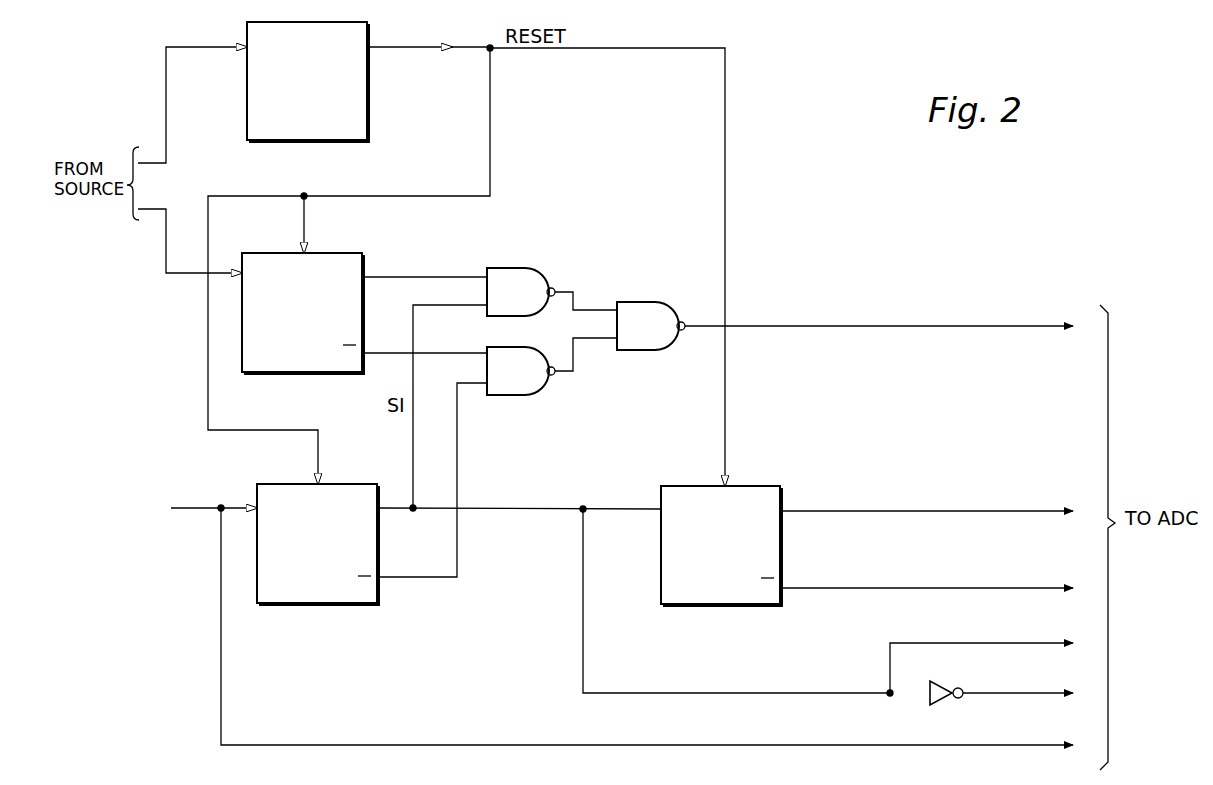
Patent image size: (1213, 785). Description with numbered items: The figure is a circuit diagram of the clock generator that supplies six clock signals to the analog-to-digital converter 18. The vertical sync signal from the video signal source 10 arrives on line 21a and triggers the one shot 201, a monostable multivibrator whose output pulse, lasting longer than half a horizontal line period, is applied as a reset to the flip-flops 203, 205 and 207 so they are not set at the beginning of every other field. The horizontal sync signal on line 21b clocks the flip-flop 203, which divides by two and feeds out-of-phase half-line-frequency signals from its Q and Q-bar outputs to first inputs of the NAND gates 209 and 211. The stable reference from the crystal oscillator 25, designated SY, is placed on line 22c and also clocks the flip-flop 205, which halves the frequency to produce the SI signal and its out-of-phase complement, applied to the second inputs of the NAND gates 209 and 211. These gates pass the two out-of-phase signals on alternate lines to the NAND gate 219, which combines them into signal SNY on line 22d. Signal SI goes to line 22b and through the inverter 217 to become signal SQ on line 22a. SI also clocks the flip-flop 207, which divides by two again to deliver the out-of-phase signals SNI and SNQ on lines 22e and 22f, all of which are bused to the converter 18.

The video signal source 10 is at (80, 208).
The analog-to-digital converter 18 is at (1159, 548).
The crystal oscillator 25 is at (165, 491).
The vertical sync line 21a is at (167, 163).
The horizontal sync line 21b is at (166, 209).
The one shot 201 is at (325, 111).
The flip-flop 203 is at (303, 313).
The flip-flop 205 is at (301, 592).
The flip-flop 207 is at (704, 597).
The NAND gate 209 is at (510, 268).
The NAND gate 211 is at (498, 395).
The NAND gate 219 is at (628, 350).
The inverter 217 is at (936, 681).
The line 22a is at (1000, 691).
The line 22b is at (948, 640).
The line 22c is at (962, 750).
The line 22d is at (993, 333).
The line 22e is at (1017, 516).
The line 22f is at (1022, 592).